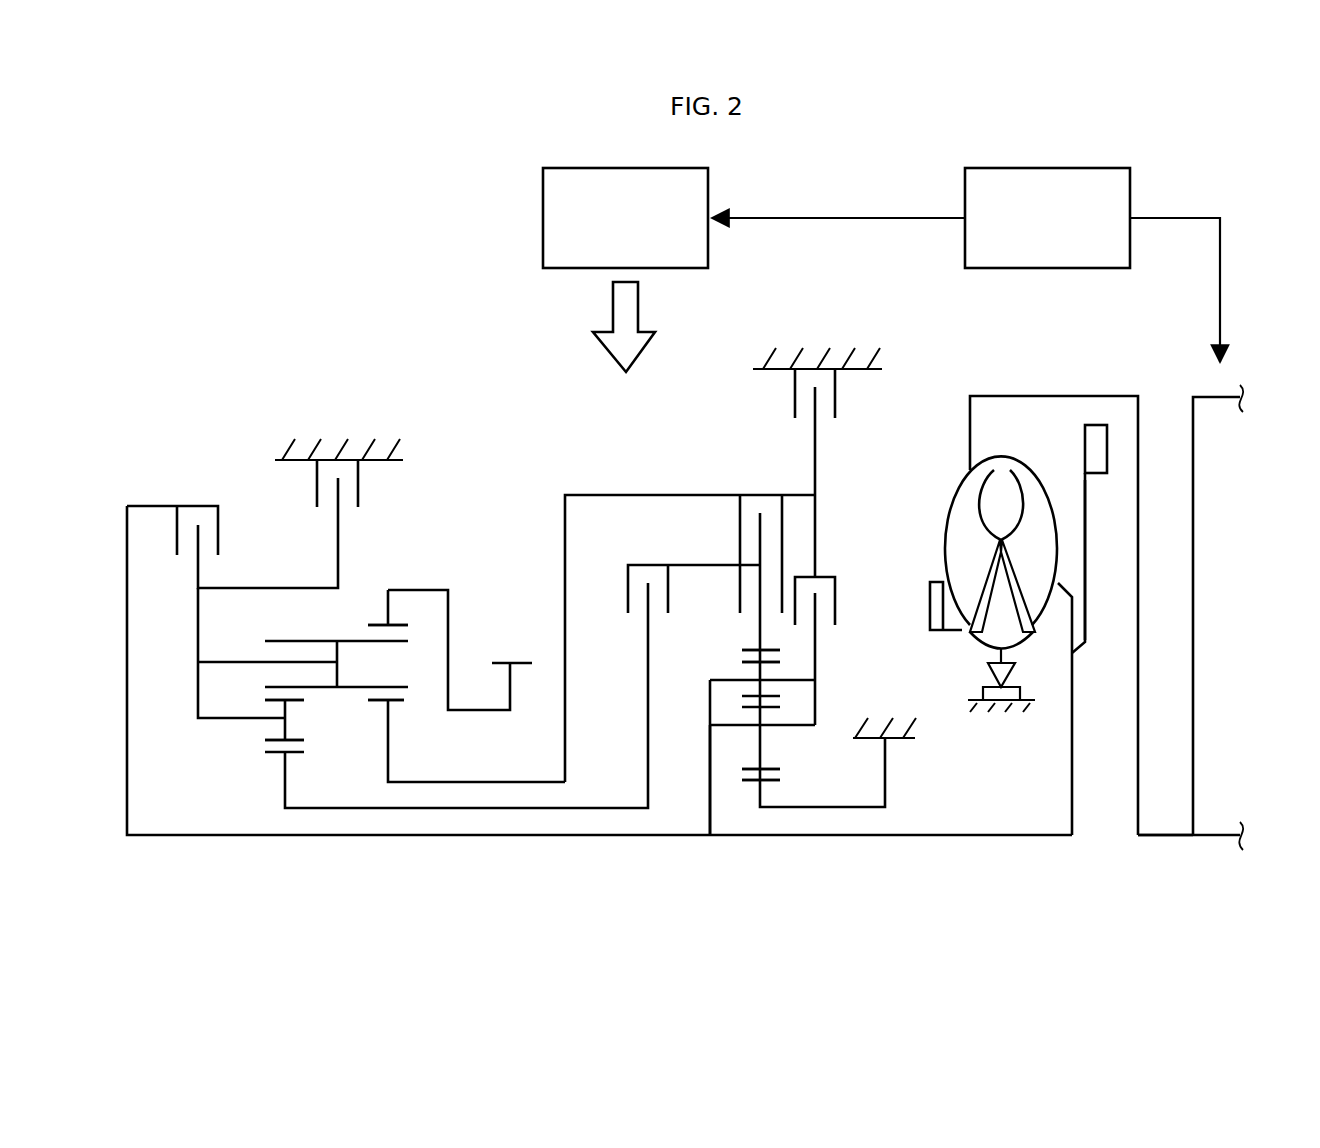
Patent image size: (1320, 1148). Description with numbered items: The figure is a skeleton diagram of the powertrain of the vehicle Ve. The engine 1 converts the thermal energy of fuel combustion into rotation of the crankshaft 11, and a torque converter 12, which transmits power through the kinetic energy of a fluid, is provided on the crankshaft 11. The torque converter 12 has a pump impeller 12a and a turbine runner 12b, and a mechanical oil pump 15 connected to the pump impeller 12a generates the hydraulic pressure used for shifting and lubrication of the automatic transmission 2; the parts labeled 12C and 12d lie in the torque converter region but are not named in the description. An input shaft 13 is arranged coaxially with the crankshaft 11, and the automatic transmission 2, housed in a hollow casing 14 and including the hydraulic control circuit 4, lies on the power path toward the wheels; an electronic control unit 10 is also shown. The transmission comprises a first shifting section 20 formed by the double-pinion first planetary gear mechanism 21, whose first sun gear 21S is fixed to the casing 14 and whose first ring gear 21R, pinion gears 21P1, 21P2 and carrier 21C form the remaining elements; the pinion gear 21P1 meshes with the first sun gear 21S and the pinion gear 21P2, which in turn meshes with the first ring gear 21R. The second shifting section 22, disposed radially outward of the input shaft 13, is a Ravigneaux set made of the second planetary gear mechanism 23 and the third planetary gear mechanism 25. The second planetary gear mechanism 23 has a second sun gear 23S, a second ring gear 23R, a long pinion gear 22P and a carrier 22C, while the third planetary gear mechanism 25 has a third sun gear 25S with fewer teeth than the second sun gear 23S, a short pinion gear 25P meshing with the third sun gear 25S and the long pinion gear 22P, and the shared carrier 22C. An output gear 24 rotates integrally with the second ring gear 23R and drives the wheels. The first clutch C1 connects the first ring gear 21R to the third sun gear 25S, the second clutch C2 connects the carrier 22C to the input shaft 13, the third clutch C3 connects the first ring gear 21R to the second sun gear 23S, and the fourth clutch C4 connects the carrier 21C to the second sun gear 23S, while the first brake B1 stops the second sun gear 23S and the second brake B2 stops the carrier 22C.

The vehicle Ve is at (425, 258).
The engine 1 is at (1205, 408).
The automatic transmission 2 is at (458, 428).
The hydraulic control circuit 4 is at (612, 168).
The electronic control unit 10 is at (1032, 168).
The crankshaft 11 is at (1158, 835).
The torque converter 12 is at (945, 422).
The pump impeller 12a is at (945, 512).
The turbine runner 12b is at (1037, 468).
The motor case 12C is at (1140, 522).
The gap 12d is at (1103, 494).
The input shaft 13 is at (970, 835).
The casing 14 is at (785, 365).
The mechanical oil pump 15 is at (935, 580).
The first shifting section 20 is at (829, 682).
The first planetary gear mechanism 21 is at (843, 640).
The first sun gear 21S is at (780, 770).
The first ring gear 21R is at (743, 653).
The carrier 21C is at (815, 700).
The pinion gear 21P1 is at (740, 782).
The pinion gear 21P2 is at (745, 661).
The second shifting section 22 is at (415, 562).
The long pinion gear 22P is at (282, 640).
The carrier 22C is at (198, 644).
The second planetary gear mechanism 23 is at (375, 706).
The second ring gear 23R is at (365, 622).
The second sun gear 23S is at (410, 703).
The output gear 24 is at (512, 662).
The third planetary gear mechanism 25 is at (213, 738).
The short pinion gear 25P is at (268, 690).
The third sun gear 25S is at (268, 746).
The first brake B1 is at (765, 392).
The second brake B2 is at (305, 484).
The first clutch C1 is at (626, 632).
The second clutch C2 is at (205, 487).
The third clutch C3 is at (720, 510).
The fourth clutch C4 is at (846, 558).